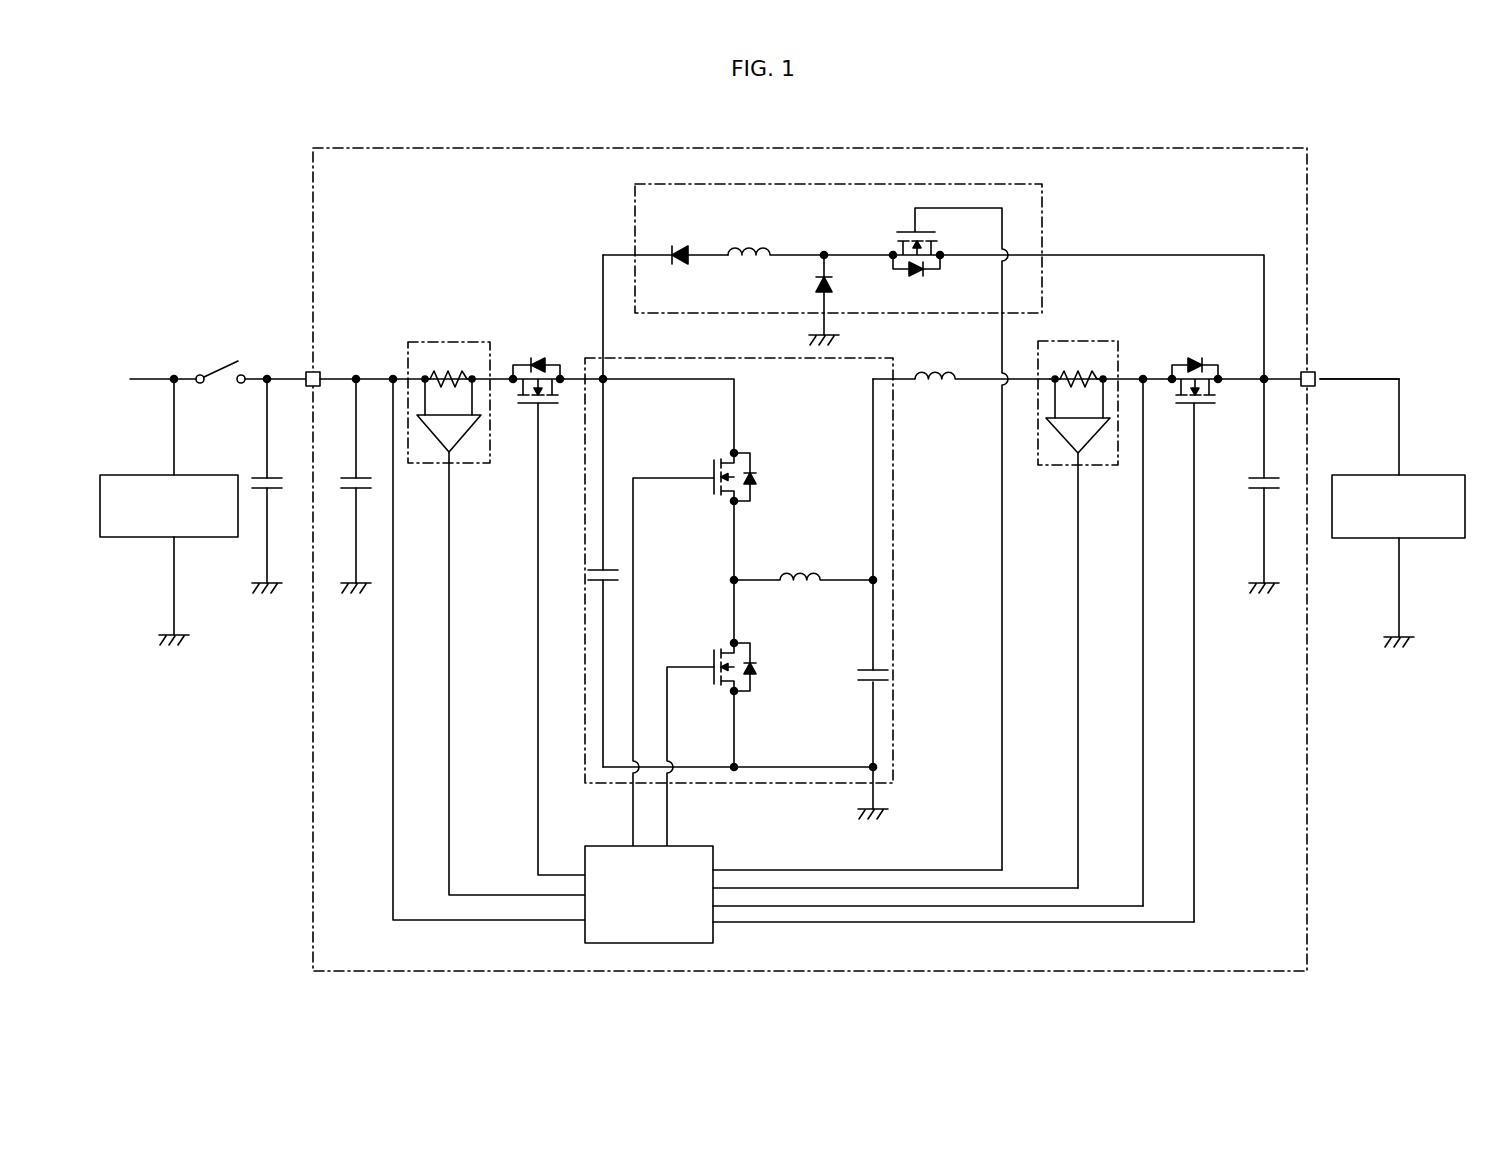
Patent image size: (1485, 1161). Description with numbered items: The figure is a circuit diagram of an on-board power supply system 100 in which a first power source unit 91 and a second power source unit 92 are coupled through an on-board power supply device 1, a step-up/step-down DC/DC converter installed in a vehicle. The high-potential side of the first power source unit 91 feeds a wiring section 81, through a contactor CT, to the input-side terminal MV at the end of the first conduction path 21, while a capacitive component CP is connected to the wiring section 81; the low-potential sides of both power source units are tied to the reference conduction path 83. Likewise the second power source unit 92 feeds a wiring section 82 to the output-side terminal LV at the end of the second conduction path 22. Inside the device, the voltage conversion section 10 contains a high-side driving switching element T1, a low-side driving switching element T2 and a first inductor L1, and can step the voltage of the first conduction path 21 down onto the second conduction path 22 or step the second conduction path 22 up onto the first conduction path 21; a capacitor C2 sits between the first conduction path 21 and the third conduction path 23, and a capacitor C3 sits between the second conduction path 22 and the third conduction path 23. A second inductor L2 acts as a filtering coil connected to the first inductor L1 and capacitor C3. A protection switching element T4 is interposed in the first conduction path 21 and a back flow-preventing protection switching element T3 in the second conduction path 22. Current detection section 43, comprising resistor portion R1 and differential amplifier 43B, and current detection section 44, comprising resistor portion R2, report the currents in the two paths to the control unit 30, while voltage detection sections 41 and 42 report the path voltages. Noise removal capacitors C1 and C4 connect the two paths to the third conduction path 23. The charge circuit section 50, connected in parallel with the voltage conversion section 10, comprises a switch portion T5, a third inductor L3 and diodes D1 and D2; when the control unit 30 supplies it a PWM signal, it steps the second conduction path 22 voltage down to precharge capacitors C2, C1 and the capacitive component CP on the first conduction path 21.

The on-board power supply device 1 is at (1255, 148).
The on-board power supply system 100 is at (1364, 226).
The voltage conversion section 10 is at (895, 548).
The first conduction path 21 is at (367, 376).
The second conduction path 22 is at (1018, 383).
The third conduction path 23 is at (354, 582).
The control unit 30 is at (710, 845).
The voltage detection section 41 is at (392, 800).
The voltage detection section 42 is at (1142, 795).
The current detection section 43 is at (460, 468).
The differential amplifier 43B is at (434, 430).
The current detection section 44 is at (1097, 341).
The charge circuit section 50 is at (1045, 207).
The wiring section 81 is at (148, 377).
The wiring section 82 is at (1385, 378).
The reference conduction path 83 is at (173, 634).
The first power source unit 91 is at (140, 538).
The second power source unit 92 is at (1375, 540).
The contactor CT is at (213, 360).
The input-side terminal MV is at (310, 368).
The output-side terminal LV is at (1322, 378).
The capacitive component CP is at (270, 476).
The capacitor C1 is at (348, 476).
The capacitor C2 is at (598, 568).
The capacitor C3 is at (883, 672).
The capacitor C4 is at (1270, 477).
The resistor portion R1 is at (448, 367).
The resistor portion R2 is at (1079, 367).
The high-side driving switching element T1 is at (731, 455).
The low-side driving switching element T2 is at (731, 645).
The protection switching element T3 is at (1205, 405).
The protection switching element T4 is at (547, 406).
The switch portion T5 is at (945, 262).
The first inductor L1 is at (803, 561).
The second inductor L2 is at (961, 362).
The third inductor L3 is at (810, 236).
The diode D1 is at (682, 250).
The diode D2 is at (820, 286).